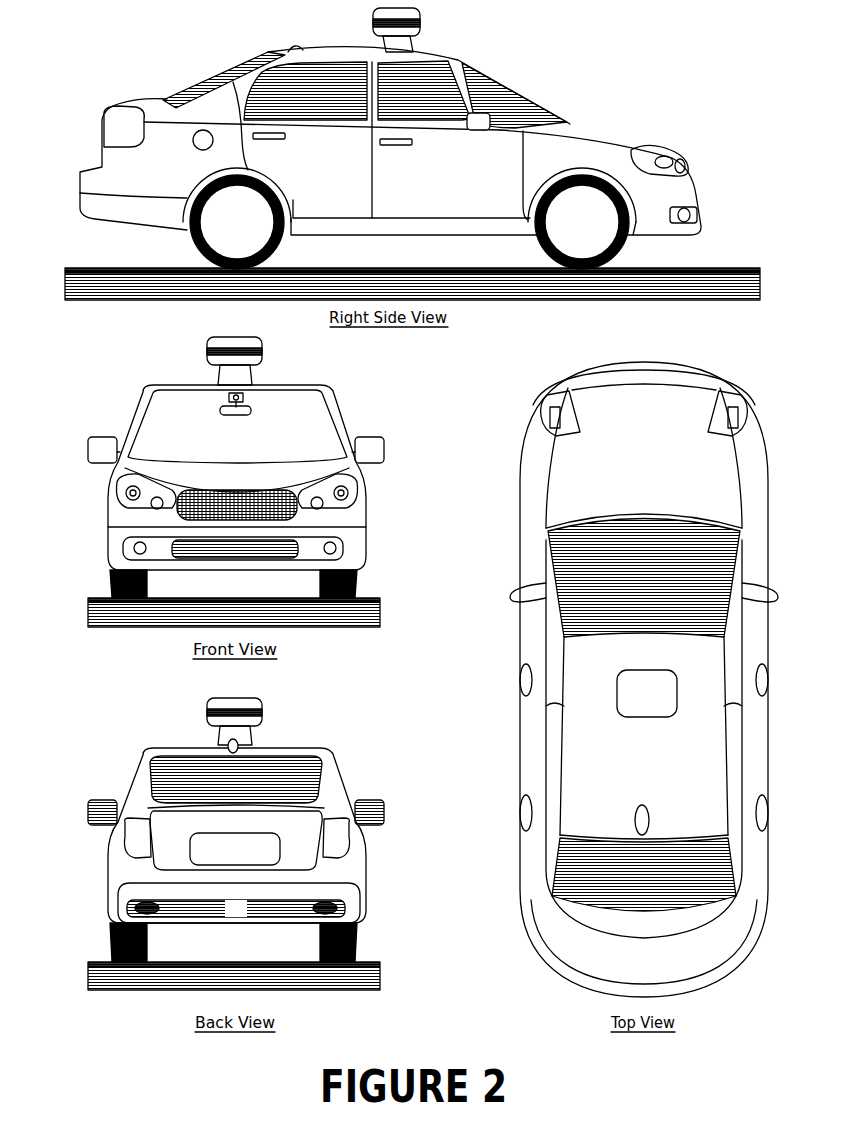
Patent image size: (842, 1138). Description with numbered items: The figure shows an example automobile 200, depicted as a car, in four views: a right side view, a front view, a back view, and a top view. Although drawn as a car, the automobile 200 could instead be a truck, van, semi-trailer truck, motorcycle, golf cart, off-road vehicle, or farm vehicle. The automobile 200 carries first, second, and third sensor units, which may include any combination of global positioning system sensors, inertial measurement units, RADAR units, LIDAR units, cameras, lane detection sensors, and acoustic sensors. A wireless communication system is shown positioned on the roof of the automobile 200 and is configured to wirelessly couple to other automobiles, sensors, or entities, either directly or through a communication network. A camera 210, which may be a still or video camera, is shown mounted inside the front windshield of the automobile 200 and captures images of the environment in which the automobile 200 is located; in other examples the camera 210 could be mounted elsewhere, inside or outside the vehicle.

The automobile 200 is at (80, 92).
The camera 210 is at (244, 398).